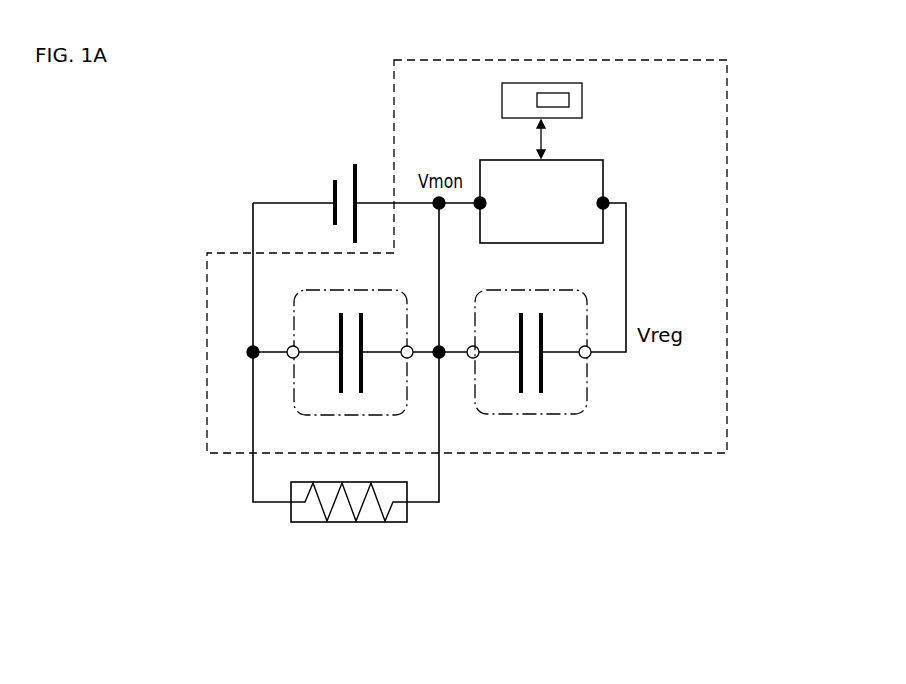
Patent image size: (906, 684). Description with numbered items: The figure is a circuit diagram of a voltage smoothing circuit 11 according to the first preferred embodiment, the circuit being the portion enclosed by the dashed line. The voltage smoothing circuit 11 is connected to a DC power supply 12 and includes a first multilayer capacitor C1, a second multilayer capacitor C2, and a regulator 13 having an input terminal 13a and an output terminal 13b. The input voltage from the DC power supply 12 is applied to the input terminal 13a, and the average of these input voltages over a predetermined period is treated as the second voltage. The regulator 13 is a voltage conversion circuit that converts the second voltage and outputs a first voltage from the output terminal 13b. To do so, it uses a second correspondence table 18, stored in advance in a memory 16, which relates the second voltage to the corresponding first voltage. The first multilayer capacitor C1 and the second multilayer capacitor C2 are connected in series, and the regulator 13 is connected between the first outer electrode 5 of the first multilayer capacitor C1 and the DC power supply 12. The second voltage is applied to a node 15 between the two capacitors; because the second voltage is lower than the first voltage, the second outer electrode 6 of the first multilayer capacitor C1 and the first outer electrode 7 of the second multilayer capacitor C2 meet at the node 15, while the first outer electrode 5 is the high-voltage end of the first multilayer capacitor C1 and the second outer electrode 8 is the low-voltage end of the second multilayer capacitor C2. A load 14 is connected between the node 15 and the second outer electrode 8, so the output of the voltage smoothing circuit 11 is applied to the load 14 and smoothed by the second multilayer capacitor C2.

The first outer electrode 5 is at (591, 358).
The second outer electrode 6 is at (471, 360).
The first outer electrode 7 is at (409, 343).
The second outer electrode 8 is at (291, 358).
The voltage smoothing circuit 11 is at (740, 73).
The DC power supply 12 is at (333, 188).
The regulator 13 is at (610, 158).
The input terminal 13a is at (479, 196).
The output terminal 13b is at (609, 202).
The load 14 is at (372, 523).
The node 15 is at (445, 347).
The memory 16 is at (553, 83).
The second correspondence table 18 is at (569, 99).
The first multilayer capacitor C1 is at (589, 323).
The second multilayer capacitor C2 is at (294, 320).